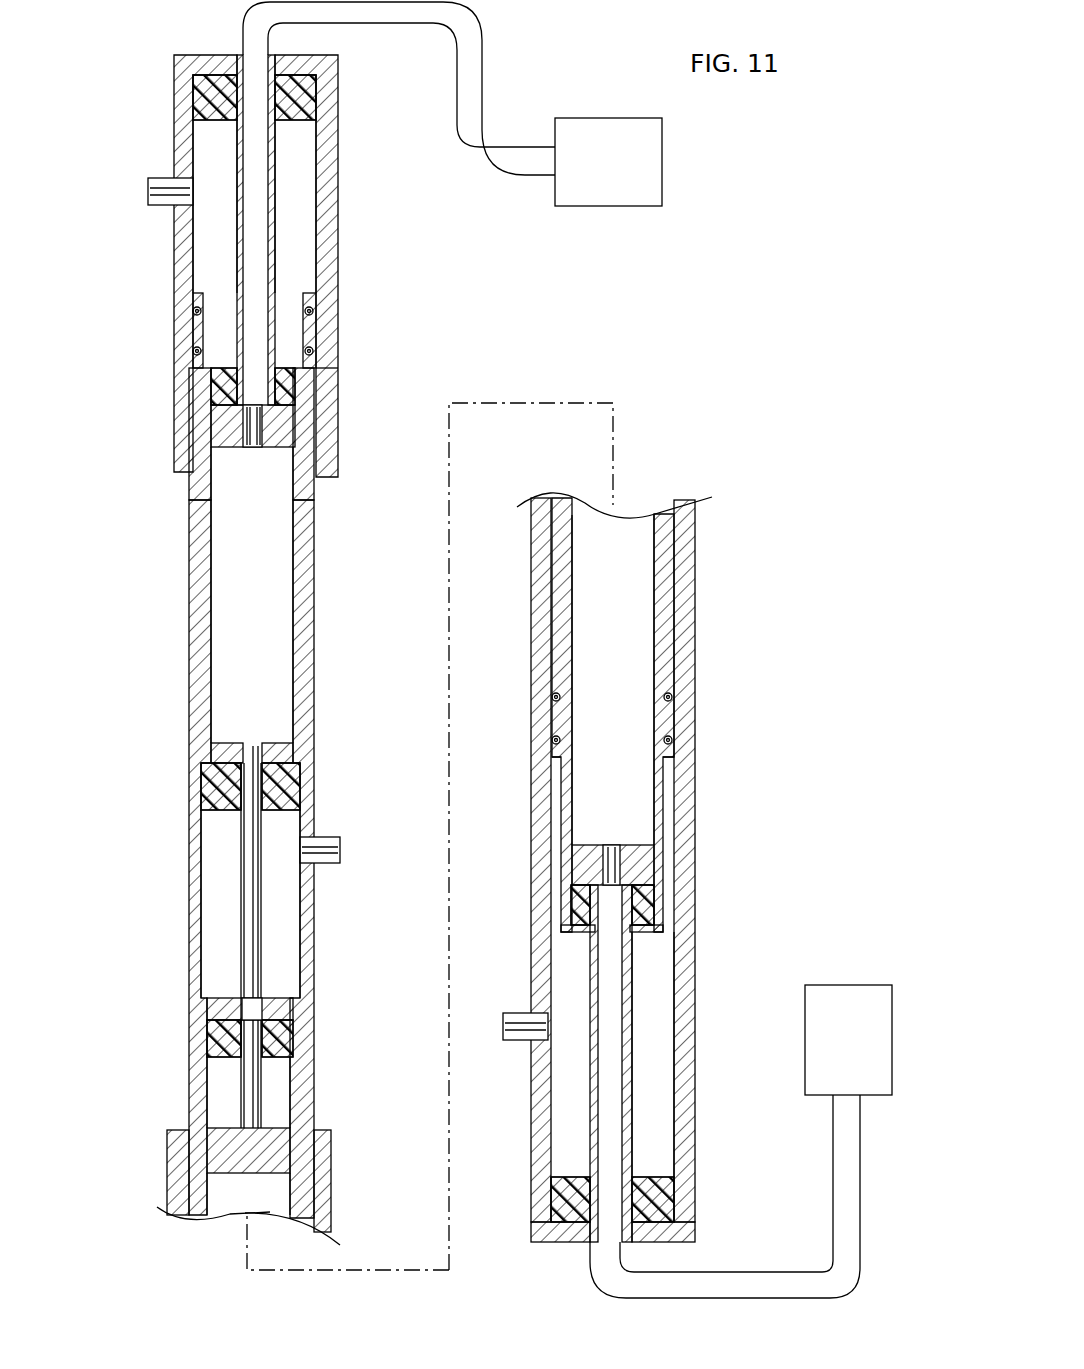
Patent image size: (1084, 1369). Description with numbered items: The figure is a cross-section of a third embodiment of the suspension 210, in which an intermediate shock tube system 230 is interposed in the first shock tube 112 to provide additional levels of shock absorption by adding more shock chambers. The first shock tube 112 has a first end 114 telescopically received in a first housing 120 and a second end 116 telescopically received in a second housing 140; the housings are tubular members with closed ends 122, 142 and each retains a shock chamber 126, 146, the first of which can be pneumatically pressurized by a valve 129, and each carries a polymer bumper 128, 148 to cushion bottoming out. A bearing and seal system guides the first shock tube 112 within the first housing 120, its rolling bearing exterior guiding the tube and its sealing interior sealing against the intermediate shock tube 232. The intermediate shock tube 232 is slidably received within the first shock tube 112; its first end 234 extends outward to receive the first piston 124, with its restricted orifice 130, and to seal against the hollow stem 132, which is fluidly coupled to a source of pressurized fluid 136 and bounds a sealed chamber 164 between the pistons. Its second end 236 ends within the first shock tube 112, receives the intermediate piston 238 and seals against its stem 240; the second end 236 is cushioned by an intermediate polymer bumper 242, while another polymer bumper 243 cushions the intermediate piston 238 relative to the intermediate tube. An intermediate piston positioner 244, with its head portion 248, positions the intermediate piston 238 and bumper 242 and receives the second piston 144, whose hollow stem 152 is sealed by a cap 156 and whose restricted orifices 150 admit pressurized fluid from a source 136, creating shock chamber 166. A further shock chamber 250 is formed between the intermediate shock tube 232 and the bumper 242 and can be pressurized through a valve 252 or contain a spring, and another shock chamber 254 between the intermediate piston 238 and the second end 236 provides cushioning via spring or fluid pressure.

The shock tube 112 is at (305, 655).
The first end 114 is at (685, 655).
The second end 116 is at (200, 383).
The first housing 120 is at (688, 840).
The closed end 122 is at (658, 1232).
The first piston 124 is at (572, 868).
The shock chamber 126 is at (655, 962).
The polymer bumper 128 is at (660, 1185).
The valve 129 is at (512, 1015).
The restricted orifice 130 is at (608, 848).
The stem portion 132 is at (590, 1090).
The source of pressurized fluid 136 is at (648, 160).
The second housing 140 is at (320, 392).
The closed end 142 is at (208, 72).
The second piston 144 is at (232, 436).
The second sealed shock chamber 146 is at (210, 243).
The polymer bumper 148 is at (202, 106).
The restricted orifice 150 is at (252, 448).
The stem portion 152 is at (237, 145).
The cap 156 is at (600, 1262).
The chamber 164 is at (618, 593).
The shock chamber 166 is at (238, 540).
The damper assembly 210 is at (799, 650).
The intermediate shock tube system 230 is at (511, 644).
The intermediate shock tube 232 is at (565, 792).
The first end 234 is at (662, 798).
The second end 236 is at (296, 1082).
The intermediate piston 238 is at (220, 1135).
The stem 240 is at (248, 852).
The intermediate polymer bumper 242 is at (212, 788).
The polymer bumper 243 is at (212, 1020).
The intermediate piston positioner 244 is at (220, 754).
The piston head 248 is at (286, 756).
The shock chamber 250 is at (220, 915).
The valve 252 is at (342, 850).
The shock chamber 254 is at (218, 1073).